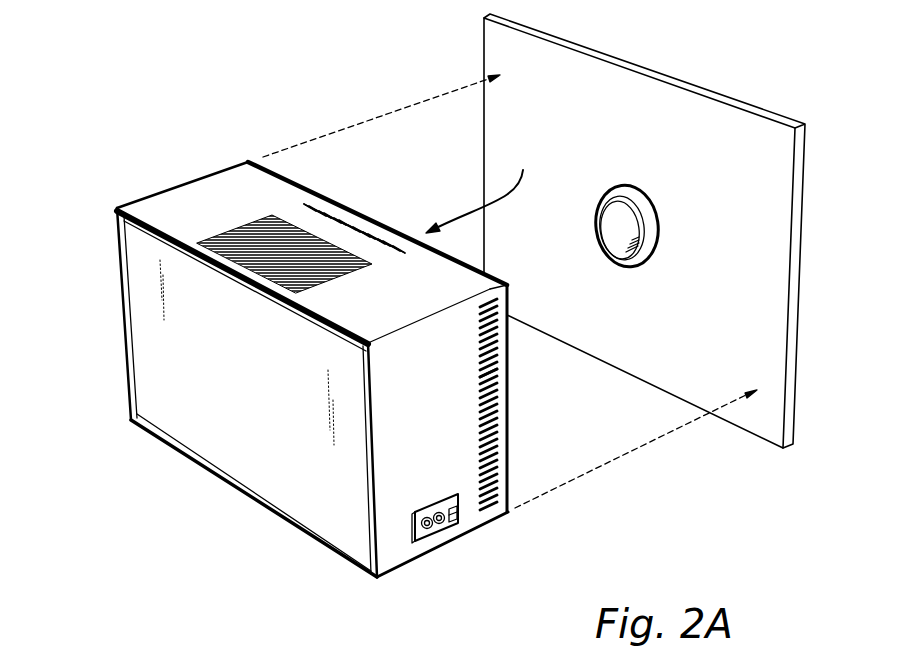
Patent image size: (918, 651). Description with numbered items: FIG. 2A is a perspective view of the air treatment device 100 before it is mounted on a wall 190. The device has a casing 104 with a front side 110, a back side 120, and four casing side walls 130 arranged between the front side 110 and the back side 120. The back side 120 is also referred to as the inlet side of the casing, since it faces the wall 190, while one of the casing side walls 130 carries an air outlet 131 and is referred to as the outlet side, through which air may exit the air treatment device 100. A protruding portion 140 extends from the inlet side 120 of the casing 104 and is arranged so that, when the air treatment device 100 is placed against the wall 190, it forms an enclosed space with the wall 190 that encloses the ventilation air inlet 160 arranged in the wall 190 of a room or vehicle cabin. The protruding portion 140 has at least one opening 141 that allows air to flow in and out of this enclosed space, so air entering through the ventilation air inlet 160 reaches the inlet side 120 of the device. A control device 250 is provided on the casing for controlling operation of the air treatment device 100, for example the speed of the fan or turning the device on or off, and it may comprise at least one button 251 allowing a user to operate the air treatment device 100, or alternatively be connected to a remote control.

The air treatment device 100 is at (215, 192).
The casing 104 is at (143, 205).
The front side 110 is at (253, 457).
The back side 120 is at (487, 187).
The casing side walls 130 is at (457, 424).
The air outlet 131 is at (286, 222).
The protruding portion 140 is at (487, 298).
The opening 141 is at (487, 375).
The ventilation air inlet 160 is at (630, 212).
The wall 190 is at (760, 255).
The control device 250 is at (452, 532).
The button 251 is at (429, 524).